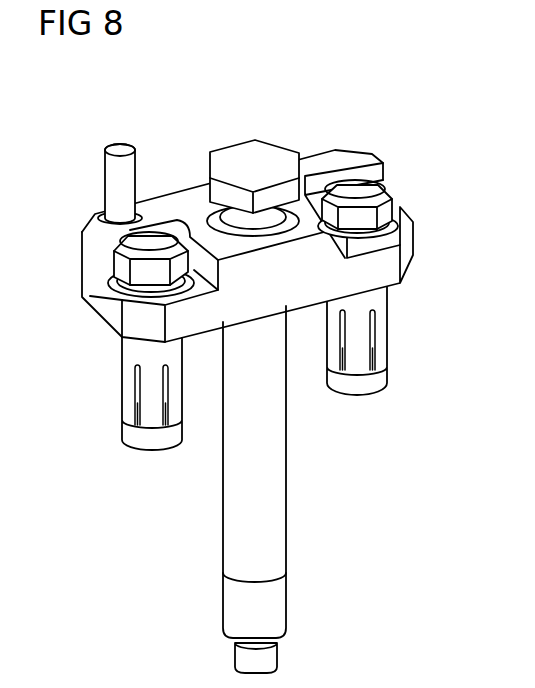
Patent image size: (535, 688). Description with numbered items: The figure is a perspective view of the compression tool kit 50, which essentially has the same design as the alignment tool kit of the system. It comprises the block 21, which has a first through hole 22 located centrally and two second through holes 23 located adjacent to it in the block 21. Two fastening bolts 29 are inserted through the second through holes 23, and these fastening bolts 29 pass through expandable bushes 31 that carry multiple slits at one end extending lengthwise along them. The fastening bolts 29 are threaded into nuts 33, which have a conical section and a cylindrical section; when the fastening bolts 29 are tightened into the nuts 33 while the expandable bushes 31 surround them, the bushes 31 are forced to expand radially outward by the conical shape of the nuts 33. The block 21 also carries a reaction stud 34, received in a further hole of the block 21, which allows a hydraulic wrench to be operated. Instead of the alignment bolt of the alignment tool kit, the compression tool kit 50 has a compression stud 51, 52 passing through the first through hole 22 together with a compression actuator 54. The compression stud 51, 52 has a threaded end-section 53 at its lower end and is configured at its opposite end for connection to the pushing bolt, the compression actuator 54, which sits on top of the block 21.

The block 21 is at (405, 248).
The first through hole 22 is at (213, 213).
The second through hole 23 is at (122, 293).
The fastening bolt 29 is at (123, 261).
The expandable bush 31 is at (132, 377).
The nut 33 is at (132, 432).
The reaction stud 34 is at (112, 179).
The compression tool kit 50 is at (395, 84).
The compression stud 51 is at (309, 444).
The shaft section 52 is at (281, 450).
The threaded end-section 53 is at (277, 605).
The compression actuator 54 is at (268, 153).